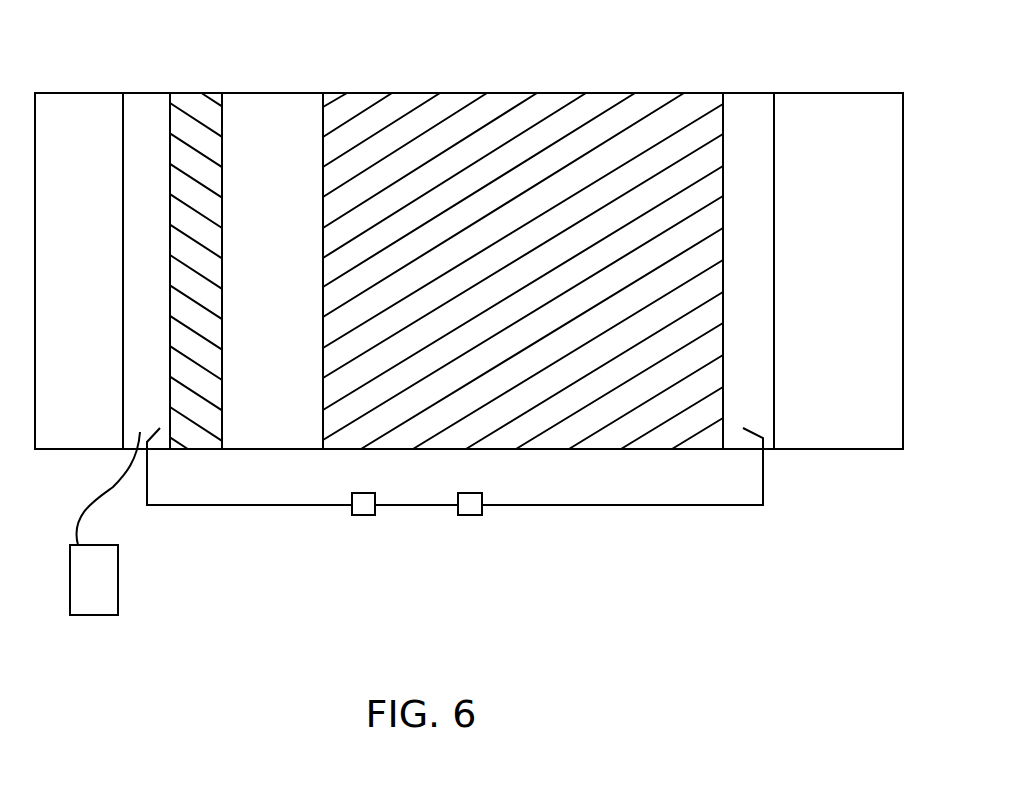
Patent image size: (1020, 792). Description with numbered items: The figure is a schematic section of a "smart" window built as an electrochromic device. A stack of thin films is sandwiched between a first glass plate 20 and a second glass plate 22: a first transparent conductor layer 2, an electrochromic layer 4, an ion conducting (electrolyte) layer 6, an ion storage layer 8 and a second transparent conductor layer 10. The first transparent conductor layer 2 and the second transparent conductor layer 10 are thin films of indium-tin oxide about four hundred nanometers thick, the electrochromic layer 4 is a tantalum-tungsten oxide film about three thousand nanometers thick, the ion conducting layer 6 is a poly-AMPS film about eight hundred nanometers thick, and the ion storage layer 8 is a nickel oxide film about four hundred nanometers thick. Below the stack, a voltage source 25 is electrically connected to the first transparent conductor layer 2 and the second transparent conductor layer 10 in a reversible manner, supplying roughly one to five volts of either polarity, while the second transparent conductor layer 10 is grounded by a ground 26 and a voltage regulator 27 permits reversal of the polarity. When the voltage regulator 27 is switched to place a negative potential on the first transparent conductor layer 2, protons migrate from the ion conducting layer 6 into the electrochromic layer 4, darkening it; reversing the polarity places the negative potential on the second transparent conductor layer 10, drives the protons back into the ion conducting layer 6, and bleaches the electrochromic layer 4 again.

The first transparent conductor layer 2 is at (753, 105).
The electrochromic layer 4 is at (483, 108).
The ion conducting (electrolyte) layer 6 is at (303, 107).
The ion storage layer 8 is at (200, 107).
The second transparent conductor layer 10 is at (146, 107).
The first glass plate 20 is at (823, 291).
The second glass plate 22 is at (73, 284).
The voltage source 25 is at (365, 515).
The ground 26 is at (81, 589).
The voltage regulator 27 is at (468, 515).